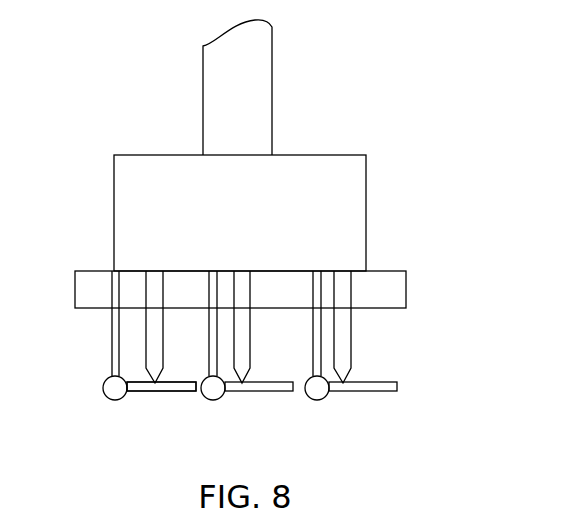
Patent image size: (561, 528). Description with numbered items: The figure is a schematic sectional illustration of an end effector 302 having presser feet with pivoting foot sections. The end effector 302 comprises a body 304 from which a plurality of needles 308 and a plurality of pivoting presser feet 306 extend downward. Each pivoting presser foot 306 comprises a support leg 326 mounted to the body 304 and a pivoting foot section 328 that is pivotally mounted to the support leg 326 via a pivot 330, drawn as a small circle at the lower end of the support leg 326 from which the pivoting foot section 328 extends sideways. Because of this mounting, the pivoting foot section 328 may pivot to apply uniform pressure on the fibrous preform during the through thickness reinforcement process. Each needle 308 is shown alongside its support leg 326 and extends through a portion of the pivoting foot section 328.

The end effector 302 is at (412, 106).
The body 304 is at (366, 222).
The pivoting presser foot 306 is at (186, 392).
The needle 308 is at (152, 342).
The support leg 326 is at (112, 350).
The pivoting foot section 328 is at (165, 390).
The pivot 330 is at (115, 392).